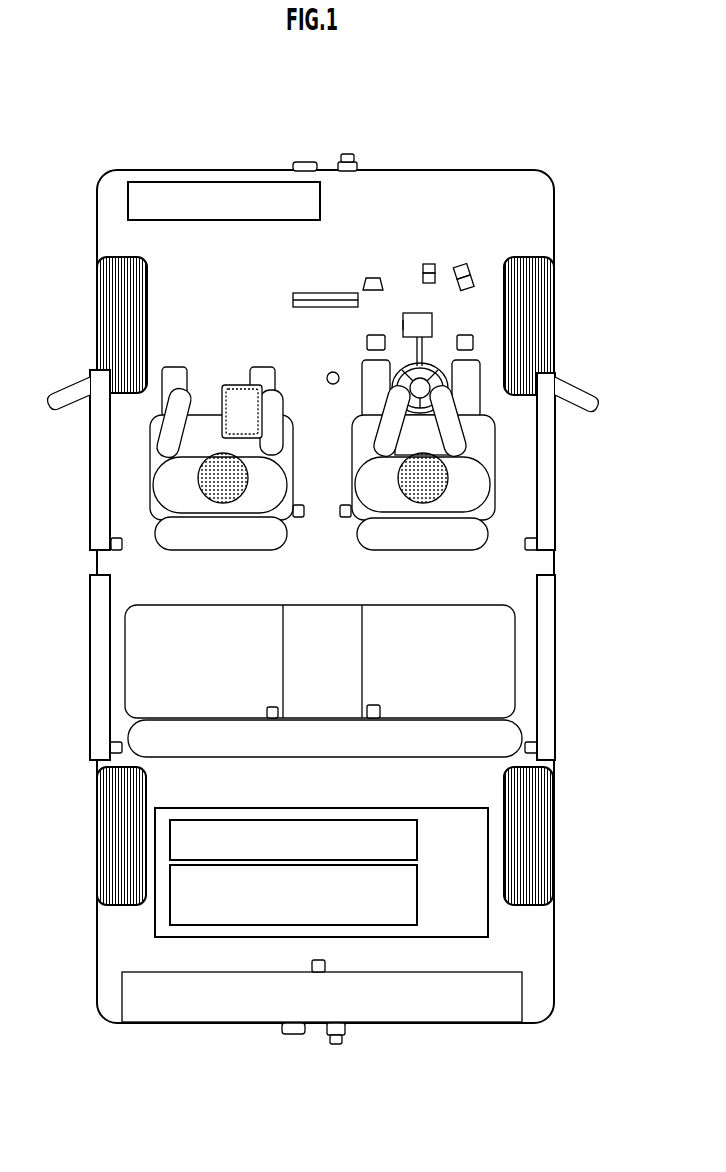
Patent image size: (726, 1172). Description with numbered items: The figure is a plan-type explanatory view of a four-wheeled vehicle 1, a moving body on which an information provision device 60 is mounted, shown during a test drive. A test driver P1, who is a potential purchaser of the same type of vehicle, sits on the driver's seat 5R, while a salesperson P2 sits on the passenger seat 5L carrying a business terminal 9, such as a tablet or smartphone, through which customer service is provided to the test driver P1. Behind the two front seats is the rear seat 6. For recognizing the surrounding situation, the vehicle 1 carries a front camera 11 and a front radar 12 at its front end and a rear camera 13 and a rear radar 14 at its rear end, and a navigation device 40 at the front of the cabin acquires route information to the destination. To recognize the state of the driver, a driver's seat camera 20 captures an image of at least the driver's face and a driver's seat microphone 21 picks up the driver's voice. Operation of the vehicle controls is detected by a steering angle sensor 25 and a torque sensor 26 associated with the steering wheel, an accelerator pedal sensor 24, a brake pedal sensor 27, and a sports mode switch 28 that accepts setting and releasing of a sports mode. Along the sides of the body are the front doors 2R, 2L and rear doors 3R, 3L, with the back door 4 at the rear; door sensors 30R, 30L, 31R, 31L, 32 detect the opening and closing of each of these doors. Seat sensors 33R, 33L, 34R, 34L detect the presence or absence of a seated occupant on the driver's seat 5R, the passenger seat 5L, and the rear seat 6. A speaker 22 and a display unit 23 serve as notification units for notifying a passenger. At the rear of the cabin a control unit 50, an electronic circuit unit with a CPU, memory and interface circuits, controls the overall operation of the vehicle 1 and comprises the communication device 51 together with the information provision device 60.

The four-wheeled vehicle 1 is at (453, 170).
The front door 2L is at (89, 492).
The front door 2R is at (556, 490).
The rear door 3L is at (89, 703).
The rear door 3R is at (556, 700).
The back door 4 is at (462, 1016).
The passenger seat 5L is at (237, 538).
The driver's seat 5R is at (458, 540).
The rear seat 6 is at (196, 756).
The business terminal 9 is at (238, 382).
The front camera 11 is at (348, 153).
The front radar 12 is at (304, 161).
The rear camera 13 is at (338, 1046).
The rear radar 14 is at (295, 1036).
The driver's seat camera 20 is at (467, 268).
The driver's seat microphone 21 is at (427, 263).
The speaker 22 is at (371, 277).
The display unit 23 is at (337, 292).
The accelerator pedal sensor 24 is at (468, 336).
The steering angle sensor 25 is at (430, 320).
The torque sensor 26 is at (403, 326).
The brake pedal sensor 27 is at (366, 340).
The sports mode switch 28 is at (332, 371).
The door sensor 30L is at (110, 545).
The door sensor 30R is at (539, 545).
The door sensor 31L is at (109, 745).
The door sensor 31R is at (539, 750).
The door sensor 32 is at (328, 965).
The seat sensor 33L is at (298, 519).
The seat sensor 33R is at (345, 520).
The seat sensor 34L is at (270, 706).
The seat sensor 34R is at (381, 706).
The navigation device 40 is at (213, 180).
The control unit 50 is at (445, 808).
The communication device 51 is at (419, 842).
The information provision device 60 is at (419, 876).
The test driver P1 is at (478, 485).
The salesperson P2 is at (170, 480).